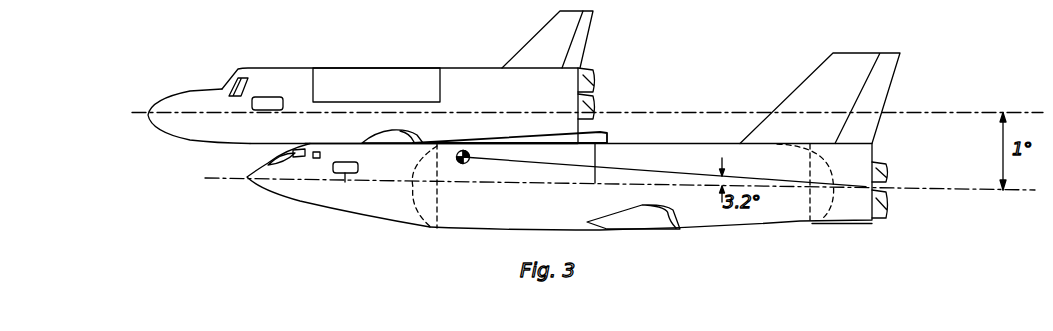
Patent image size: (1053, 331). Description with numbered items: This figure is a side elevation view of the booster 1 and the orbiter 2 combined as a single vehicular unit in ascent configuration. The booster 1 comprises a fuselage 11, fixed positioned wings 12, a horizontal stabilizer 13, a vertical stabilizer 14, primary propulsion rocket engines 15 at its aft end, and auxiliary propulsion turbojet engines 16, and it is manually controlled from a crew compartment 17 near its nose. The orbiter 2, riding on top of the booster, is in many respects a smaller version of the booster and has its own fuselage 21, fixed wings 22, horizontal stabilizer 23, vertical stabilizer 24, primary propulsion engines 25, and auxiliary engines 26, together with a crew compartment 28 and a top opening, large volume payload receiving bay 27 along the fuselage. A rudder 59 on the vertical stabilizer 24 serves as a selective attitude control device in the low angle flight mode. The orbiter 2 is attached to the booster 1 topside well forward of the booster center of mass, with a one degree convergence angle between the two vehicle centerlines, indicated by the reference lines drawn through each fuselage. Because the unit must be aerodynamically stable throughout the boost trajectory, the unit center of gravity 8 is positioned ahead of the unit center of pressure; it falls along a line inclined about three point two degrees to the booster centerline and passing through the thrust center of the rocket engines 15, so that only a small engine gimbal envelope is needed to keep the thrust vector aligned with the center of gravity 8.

The booster 1 is at (546, 214).
The orbiter 2 is at (514, 102).
The unit center of gravity 8 is at (463, 164).
The fuselage 11 is at (383, 211).
The fixed positioned wings 12 is at (660, 223).
The horizontal stabilizer 13 is at (852, 222).
The vertical stabilizer 14 is at (839, 104).
The primary propulsion rocket engines 15 is at (889, 173).
The auxiliary propulsion turbojet engines 16 is at (345, 176).
The crew compartment 17 is at (268, 163).
The fuselage 21 is at (248, 140).
The fixed wings 22 is at (416, 135).
The horizontal stabilizer 23 is at (600, 133).
The vertical stabilizer 24 is at (556, 53).
The primary propulsion engines 25 is at (597, 88).
The auxiliary engines 26 is at (276, 99).
The payload receiving bay 27 is at (384, 95).
The crew compartment 28 is at (222, 89).
The rudder 59 is at (585, 30).